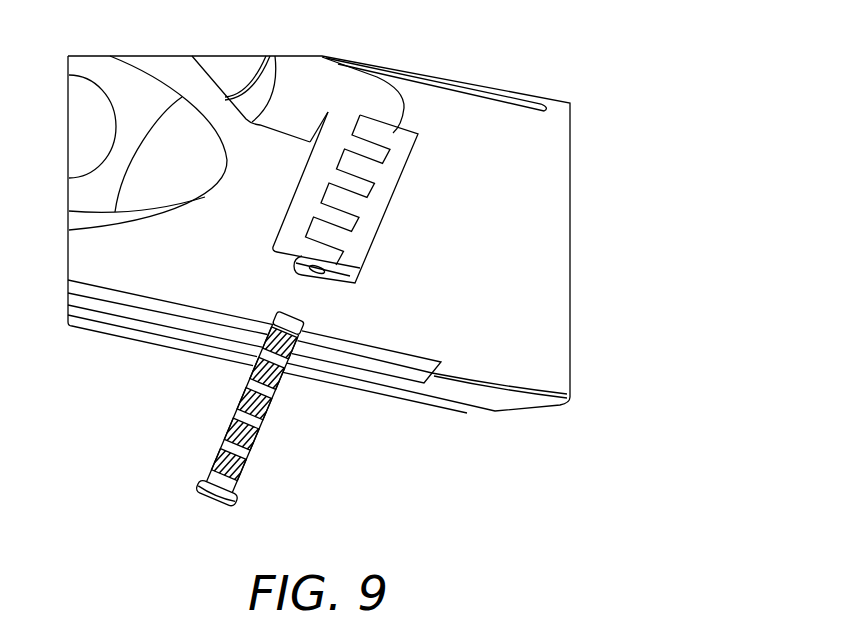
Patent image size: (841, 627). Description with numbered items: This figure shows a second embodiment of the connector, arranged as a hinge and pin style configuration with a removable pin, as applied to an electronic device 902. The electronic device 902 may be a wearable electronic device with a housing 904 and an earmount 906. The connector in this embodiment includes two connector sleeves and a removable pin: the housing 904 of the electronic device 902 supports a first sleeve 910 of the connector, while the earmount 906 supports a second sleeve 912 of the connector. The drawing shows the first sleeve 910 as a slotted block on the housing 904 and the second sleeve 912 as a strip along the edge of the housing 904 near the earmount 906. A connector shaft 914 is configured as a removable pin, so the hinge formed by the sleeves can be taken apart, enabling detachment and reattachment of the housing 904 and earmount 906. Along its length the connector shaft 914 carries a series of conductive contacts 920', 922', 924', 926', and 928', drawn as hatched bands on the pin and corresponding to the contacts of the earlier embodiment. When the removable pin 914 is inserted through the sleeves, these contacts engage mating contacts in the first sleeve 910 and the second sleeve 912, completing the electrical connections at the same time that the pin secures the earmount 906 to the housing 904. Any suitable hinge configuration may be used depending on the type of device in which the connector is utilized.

The electronic device 902 is at (387, 283).
The housing 904 is at (83, 328).
The earmount 906 is at (315, 71).
The first sleeve 910 is at (414, 133).
The second sleeve 912 is at (382, 78).
The connector shaft 914 is at (211, 505).
The conductive contact 920' is at (195, 465).
The conductive contact 922' is at (207, 434).
The conductive contact 924' is at (220, 404).
The conductive contact 926' is at (232, 374).
The conductive contact 928' is at (325, 335).